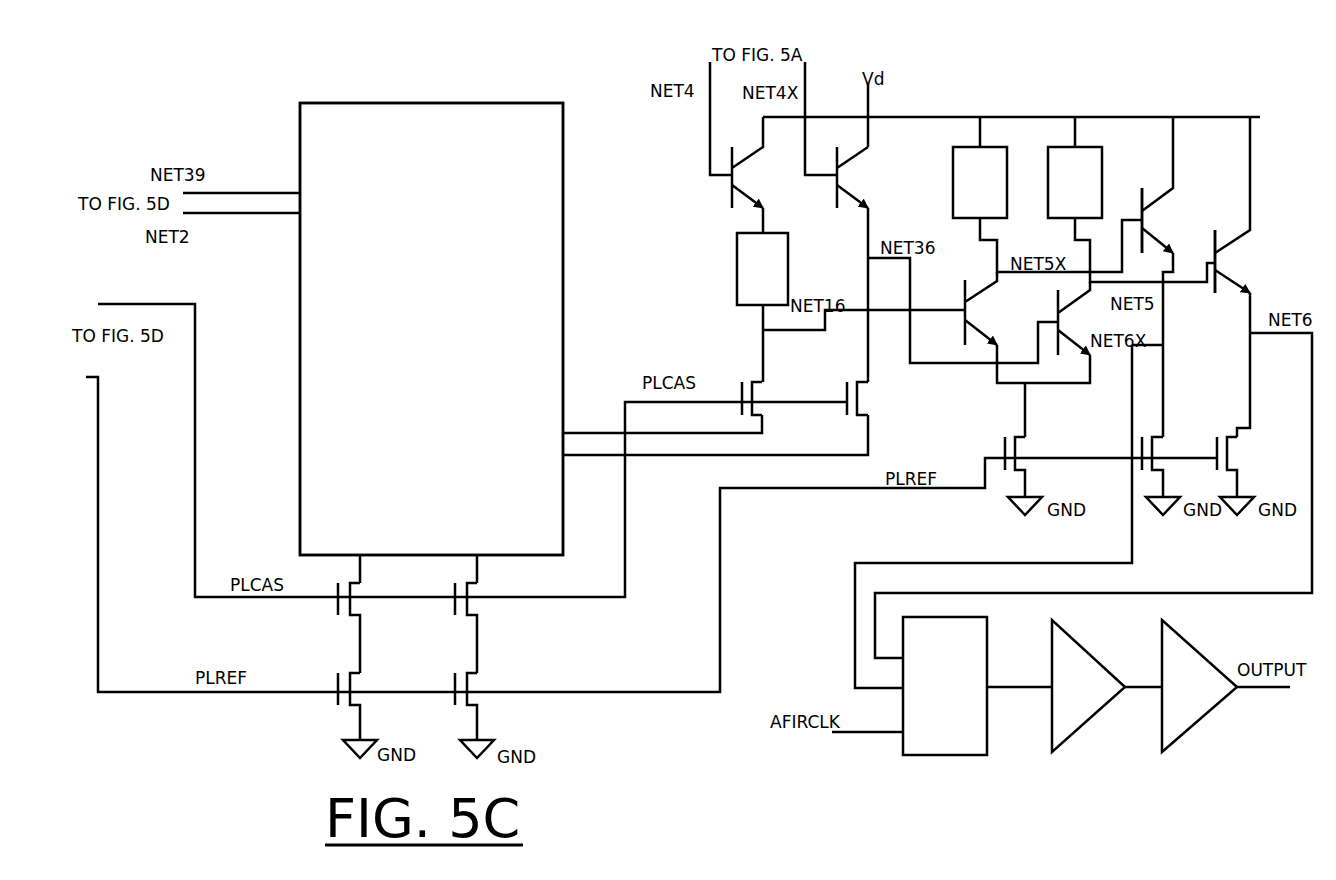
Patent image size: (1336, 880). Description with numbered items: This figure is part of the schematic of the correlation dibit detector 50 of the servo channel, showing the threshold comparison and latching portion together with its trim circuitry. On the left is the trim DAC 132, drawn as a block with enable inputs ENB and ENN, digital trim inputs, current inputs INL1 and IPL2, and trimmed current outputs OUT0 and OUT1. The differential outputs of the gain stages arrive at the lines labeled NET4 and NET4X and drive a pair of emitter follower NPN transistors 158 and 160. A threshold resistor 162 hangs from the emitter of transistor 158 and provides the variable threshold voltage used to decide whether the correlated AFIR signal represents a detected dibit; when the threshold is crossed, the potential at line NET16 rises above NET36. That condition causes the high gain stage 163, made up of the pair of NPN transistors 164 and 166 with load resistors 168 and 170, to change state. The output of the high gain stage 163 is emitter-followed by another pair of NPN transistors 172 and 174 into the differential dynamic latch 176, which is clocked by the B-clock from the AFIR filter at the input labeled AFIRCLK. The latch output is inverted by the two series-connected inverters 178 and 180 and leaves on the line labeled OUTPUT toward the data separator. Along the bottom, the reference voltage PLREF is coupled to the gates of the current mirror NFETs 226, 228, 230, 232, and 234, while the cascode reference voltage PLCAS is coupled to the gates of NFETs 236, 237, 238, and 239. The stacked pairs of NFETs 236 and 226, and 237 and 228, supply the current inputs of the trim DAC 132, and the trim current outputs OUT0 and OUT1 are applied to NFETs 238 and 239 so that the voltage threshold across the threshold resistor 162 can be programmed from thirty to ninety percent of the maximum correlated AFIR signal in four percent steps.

The dibit detector 50 is at (386, 68).
The trim DAC 132 is at (412, 330).
The emitter follower NPN transistor 158 is at (757, 175).
The emitter follower NPN transistor 160 is at (862, 177).
The threshold resistor 162 is at (762, 269).
The high gain stage 163 is at (1165, 156).
The NPN transistor 164 is at (990, 308).
The NPN transistor 166 is at (1084, 318).
The resistor 168 is at (980, 182).
The resistor 170 is at (1075, 182).
The NPN transistor 172 is at (1167, 185).
The NPN transistor 174 is at (1241, 205).
The differential dynamic latch 176 is at (945, 686).
The inverter 178 is at (1088, 686).
The inverter 180 is at (1199, 686).
The current mirror NFET 226 is at (369, 715).
The current mirror NFET 228 is at (484, 715).
The current mirror NFET 230 is at (1035, 465).
The current mirror NFET 232 is at (1173, 466).
The current mirror NFET 234 is at (1247, 468).
The current mirror NFET 236 is at (370, 628).
The current mirror NFET 237 is at (489, 628).
The NFET 238 is at (774, 394).
The NFET 239 is at (879, 392).